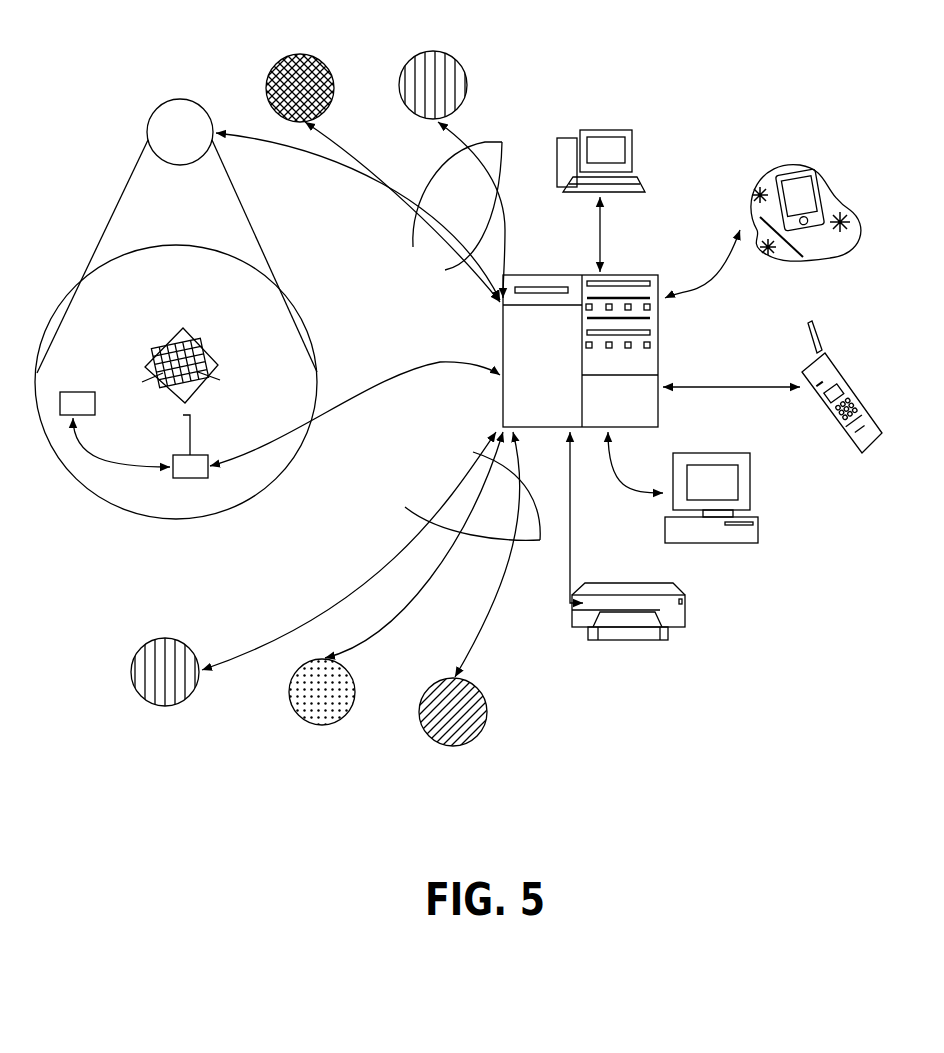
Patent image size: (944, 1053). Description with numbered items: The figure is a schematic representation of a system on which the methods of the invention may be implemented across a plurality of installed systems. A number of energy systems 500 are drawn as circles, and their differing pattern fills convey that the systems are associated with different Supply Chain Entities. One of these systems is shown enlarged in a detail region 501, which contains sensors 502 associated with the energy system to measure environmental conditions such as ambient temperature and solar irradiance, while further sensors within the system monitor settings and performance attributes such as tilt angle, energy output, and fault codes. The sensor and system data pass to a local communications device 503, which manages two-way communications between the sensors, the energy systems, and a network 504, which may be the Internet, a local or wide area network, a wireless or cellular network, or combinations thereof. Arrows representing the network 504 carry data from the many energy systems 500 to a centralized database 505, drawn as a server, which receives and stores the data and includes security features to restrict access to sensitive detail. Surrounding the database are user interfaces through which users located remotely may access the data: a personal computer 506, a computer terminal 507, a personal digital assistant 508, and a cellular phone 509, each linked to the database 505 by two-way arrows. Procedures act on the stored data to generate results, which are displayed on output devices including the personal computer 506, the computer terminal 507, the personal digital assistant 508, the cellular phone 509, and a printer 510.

The energy systems 500 is at (396, 64).
The monitored field region 501 is at (146, 321).
The sensors associated with the energy system 502 is at (60, 418).
The local communications device 503 is at (185, 481).
The network 504 is at (422, 250).
The centralized database 505 is at (501, 325).
The personal computer 506 is at (600, 128).
The computer terminal 507 is at (731, 548).
The personal digital assistant 508 is at (744, 170).
The cellular phone 509 is at (799, 362).
The printer 510 is at (630, 646).